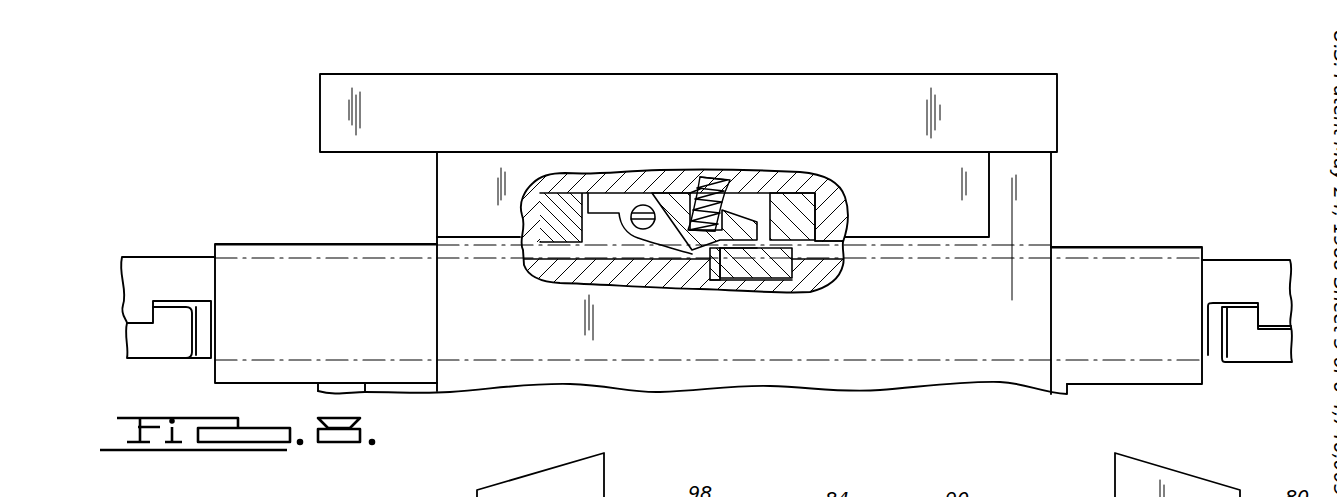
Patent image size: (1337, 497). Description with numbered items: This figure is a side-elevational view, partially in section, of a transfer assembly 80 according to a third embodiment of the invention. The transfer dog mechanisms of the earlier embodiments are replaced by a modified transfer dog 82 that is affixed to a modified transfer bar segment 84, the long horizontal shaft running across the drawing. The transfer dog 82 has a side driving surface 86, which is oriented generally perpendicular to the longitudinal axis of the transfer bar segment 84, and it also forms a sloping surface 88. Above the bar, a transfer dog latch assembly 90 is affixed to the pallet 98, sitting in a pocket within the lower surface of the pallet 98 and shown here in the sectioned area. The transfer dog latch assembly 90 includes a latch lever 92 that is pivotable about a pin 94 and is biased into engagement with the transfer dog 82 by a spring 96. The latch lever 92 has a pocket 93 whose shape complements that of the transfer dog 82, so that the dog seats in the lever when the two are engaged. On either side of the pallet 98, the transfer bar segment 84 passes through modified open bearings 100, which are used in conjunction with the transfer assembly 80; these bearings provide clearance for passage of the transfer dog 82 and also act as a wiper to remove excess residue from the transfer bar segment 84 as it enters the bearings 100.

The transfer assembly 80 is at (1097, 168).
The transfer dog 82 is at (795, 275).
The transfer bar segment 84 is at (170, 257).
The side driving surface 86 is at (705, 272).
The sloping surface 88 is at (760, 262).
The transfer dog latch assembly 90 is at (813, 192).
The latch lever 92 is at (682, 198).
The pocket 93 is at (672, 283).
The pin 94 is at (633, 203).
The spring 96 is at (742, 195).
The pallet 98 is at (437, 178).
The open bearings 100 is at (294, 244).